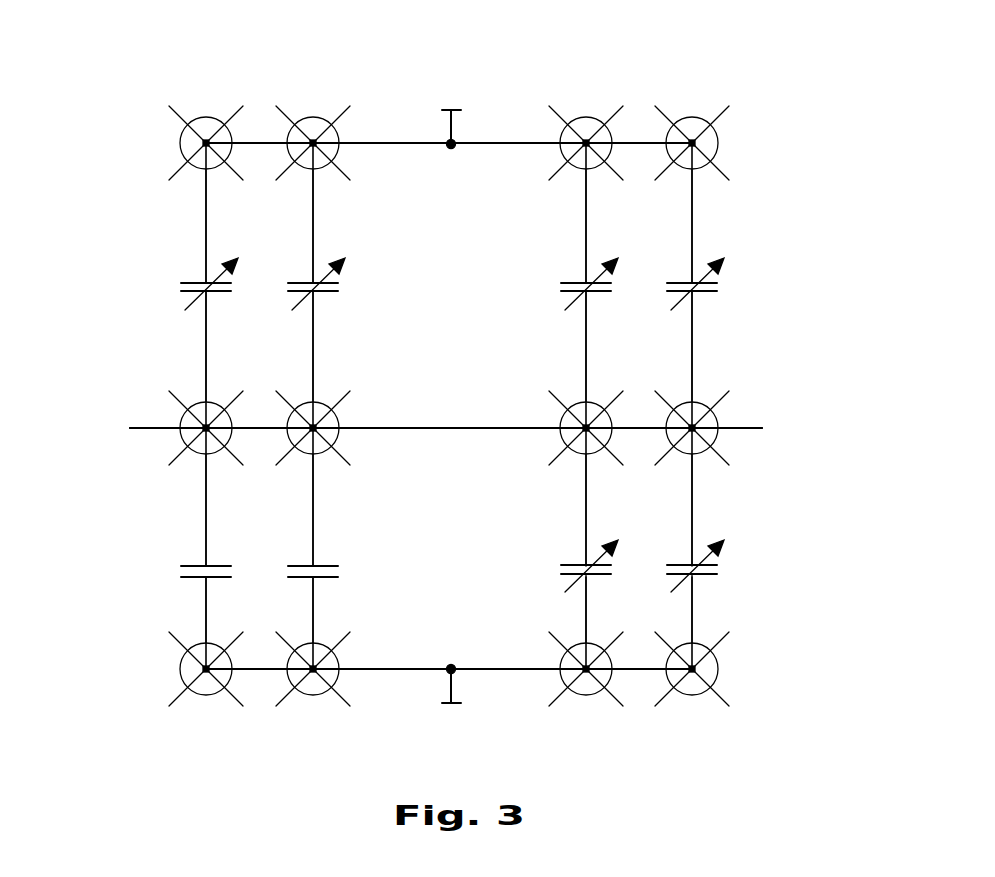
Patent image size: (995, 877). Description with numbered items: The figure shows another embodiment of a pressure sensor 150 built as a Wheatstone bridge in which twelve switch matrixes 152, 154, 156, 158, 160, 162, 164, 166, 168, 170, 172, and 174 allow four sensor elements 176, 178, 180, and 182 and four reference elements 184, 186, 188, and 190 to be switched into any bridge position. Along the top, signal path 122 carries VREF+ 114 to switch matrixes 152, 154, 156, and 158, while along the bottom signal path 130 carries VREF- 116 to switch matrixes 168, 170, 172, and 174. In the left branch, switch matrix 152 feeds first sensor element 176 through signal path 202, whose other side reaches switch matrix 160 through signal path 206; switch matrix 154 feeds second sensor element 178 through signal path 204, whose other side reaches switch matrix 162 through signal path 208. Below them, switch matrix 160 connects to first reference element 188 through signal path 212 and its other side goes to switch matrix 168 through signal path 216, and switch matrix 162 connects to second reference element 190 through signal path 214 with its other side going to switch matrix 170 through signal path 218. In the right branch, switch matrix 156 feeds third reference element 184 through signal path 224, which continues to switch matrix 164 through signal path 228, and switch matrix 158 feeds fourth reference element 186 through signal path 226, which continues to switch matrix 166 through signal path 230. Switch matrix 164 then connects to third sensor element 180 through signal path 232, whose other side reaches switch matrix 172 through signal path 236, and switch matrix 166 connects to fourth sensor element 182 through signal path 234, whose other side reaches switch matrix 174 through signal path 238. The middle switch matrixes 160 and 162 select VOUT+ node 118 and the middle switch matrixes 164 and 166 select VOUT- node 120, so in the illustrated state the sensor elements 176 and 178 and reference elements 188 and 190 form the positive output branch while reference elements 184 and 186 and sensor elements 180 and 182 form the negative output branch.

The pressure sensor 150 is at (760, 72).
The switch matrix 152 is at (207, 117).
The switch matrix 154 is at (312, 117).
The switch matrix 156 is at (585, 115).
The switch matrix 158 is at (692, 115).
The switch matrix 160 is at (197, 398).
The switch matrix 162 is at (325, 398).
The switch matrix 164 is at (578, 398).
The switch matrix 166 is at (682, 400).
The switch matrix 168 is at (202, 697).
The switch matrix 170 is at (310, 697).
The switch matrix 172 is at (583, 697).
The switch matrix 174 is at (692, 697).
The first sensor element 176 is at (218, 295).
The second sensor element 178 is at (325, 295).
The third sensor element 180 is at (597, 580).
The fourth sensor element 182 is at (705, 580).
The third reference element 184 is at (597, 295).
The fourth reference element 186 is at (705, 295).
The first reference element 188 is at (217, 580).
The second reference element 190 is at (323, 580).
The VREF+ 114 is at (445, 118).
The VREF- 116 is at (457, 703).
The VOUT+ node 118 is at (140, 424).
The VOUT- node 120 is at (740, 426).
The signal path 122 is at (403, 145).
The signal path 130 is at (403, 668).
The signal path 202 is at (203, 220).
The signal path 204 is at (313, 208).
The signal path 206 is at (202, 348).
The signal path 208 is at (315, 352).
The signal path 212 is at (202, 498).
The signal path 214 is at (317, 495).
The signal path 216 is at (203, 623).
The signal path 218 is at (315, 622).
The signal path 224 is at (583, 220).
The signal path 226 is at (692, 210).
The signal path 228 is at (583, 348).
The signal path 230 is at (694, 352).
The signal path 232 is at (583, 498).
The signal path 234 is at (695, 495).
The signal path 236 is at (583, 623).
The signal path 238 is at (694, 622).